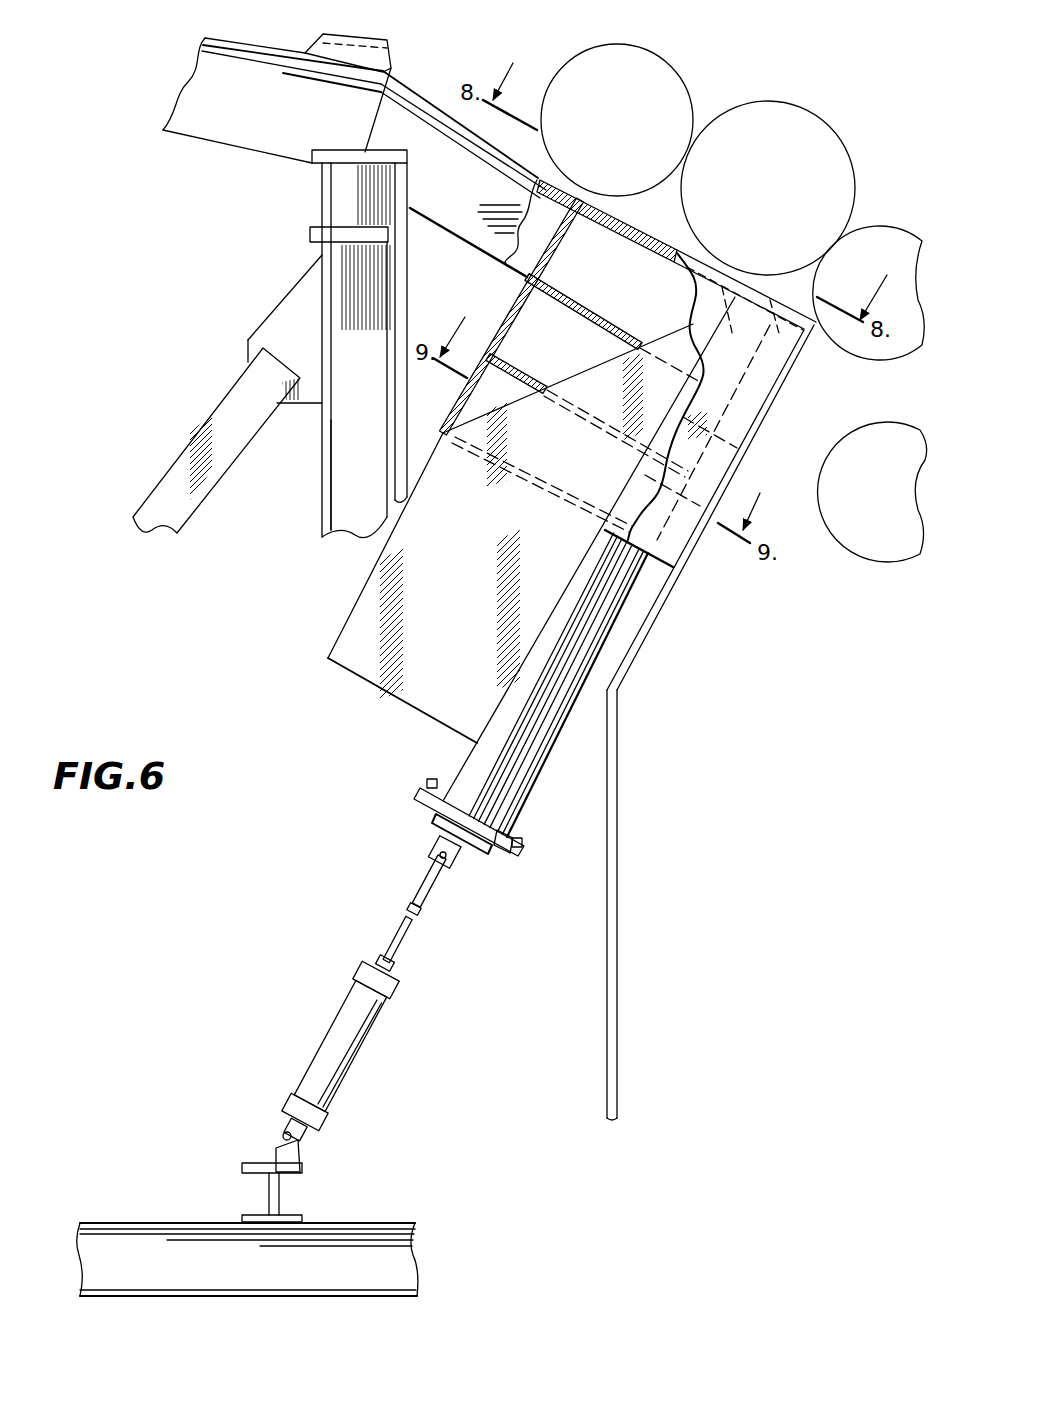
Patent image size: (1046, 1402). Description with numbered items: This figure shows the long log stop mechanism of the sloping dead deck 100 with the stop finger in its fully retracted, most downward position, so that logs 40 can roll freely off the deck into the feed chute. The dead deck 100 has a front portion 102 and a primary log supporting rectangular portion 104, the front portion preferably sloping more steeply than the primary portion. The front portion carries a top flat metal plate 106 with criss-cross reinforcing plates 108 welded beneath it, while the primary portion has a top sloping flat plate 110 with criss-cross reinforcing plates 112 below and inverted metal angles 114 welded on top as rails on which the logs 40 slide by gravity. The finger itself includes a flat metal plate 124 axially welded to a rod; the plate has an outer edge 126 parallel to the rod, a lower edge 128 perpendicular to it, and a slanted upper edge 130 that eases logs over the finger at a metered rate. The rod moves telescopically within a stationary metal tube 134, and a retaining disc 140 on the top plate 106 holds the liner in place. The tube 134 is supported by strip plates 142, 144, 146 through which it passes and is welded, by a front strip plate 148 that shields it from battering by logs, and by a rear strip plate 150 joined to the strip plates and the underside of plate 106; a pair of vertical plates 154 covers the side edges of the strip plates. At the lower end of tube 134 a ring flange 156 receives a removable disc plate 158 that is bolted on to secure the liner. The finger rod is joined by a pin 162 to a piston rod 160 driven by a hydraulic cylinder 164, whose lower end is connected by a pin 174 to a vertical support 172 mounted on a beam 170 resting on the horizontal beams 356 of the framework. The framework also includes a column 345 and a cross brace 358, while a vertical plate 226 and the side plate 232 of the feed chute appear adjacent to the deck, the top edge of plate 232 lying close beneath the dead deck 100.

The logs 40 is at (653, 87).
The dead deck 100 is at (423, 77).
The front portion 102 is at (653, 220).
The primary log supporting rectangular portion 104 is at (178, 66).
The top flat metal plate 106 is at (455, 125).
The criss-cross reinforcing plates 108 is at (468, 203).
The top sloping flat plate 110 is at (250, 48).
The criss-cross reinforcing plates 112 is at (250, 128).
The inverted metal angles 114 is at (347, 52).
The flat metal plate 124 is at (467, 577).
The outer edge 126 is at (380, 567).
The lower edge 128 is at (370, 687).
The upper edge 130 is at (573, 370).
The stationary metal tube 134 is at (533, 723).
The retaining disc 140 is at (790, 303).
The strip plate 142 is at (573, 297).
The strip plate 144 is at (527, 350).
The strip plate 146 is at (542, 490).
The front strip plate 148 is at (645, 637).
The rear strip plate 150 is at (548, 255).
The vertical plates 154 is at (728, 447).
The ring flange 156 is at (507, 827).
The removable disc plate 158 is at (437, 813).
The piston rod 160 is at (403, 923).
The pin 162 is at (450, 847).
The hydraulic cylinder 164 is at (343, 1015).
The beam 170 is at (268, 1192).
The vertical support 172 is at (293, 1152).
The pin 174 is at (280, 1127).
The vertical plate 226 is at (614, 905).
The plate 232 is at (403, 300).
The column 345 is at (350, 477).
The horizontal beam 356 is at (275, 1267).
The cross brace 358 is at (193, 450).